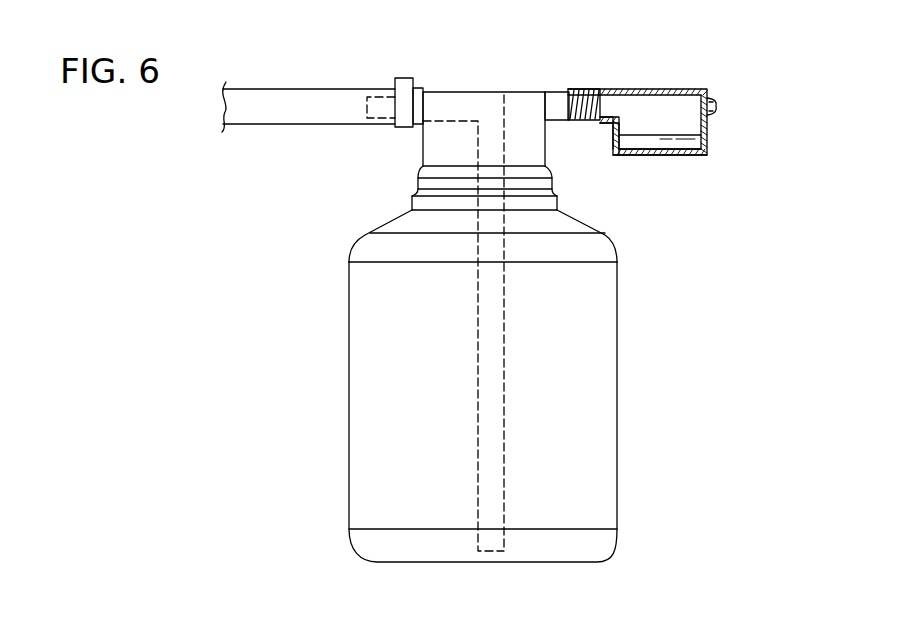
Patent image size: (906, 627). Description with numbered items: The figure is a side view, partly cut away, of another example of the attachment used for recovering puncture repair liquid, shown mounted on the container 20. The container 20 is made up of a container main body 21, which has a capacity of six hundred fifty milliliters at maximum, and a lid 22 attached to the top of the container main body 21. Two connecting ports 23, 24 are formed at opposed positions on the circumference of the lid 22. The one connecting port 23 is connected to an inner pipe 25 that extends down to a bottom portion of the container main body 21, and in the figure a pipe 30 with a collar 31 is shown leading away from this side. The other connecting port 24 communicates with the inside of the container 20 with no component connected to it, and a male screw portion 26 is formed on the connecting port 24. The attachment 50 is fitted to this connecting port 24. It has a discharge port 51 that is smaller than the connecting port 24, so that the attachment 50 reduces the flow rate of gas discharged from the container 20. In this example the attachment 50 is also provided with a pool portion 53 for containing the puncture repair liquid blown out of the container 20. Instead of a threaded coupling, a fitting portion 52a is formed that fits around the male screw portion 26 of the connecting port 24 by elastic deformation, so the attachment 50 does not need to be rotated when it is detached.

The container 20 is at (620, 355).
The container main body 21 is at (600, 460).
The lid 22 is at (527, 100).
The connecting port 23 is at (382, 96).
The connecting port 24 is at (556, 97).
The inner pipe 25 is at (478, 393).
The male screw portion 26 is at (589, 90).
The discharge tube 30 is at (272, 89).
The collar 31 is at (405, 92).
The attachment 50 is at (690, 88).
The discharge port 51 is at (718, 105).
The fitting portion 52a is at (583, 124).
The pool portion 53 is at (640, 149).